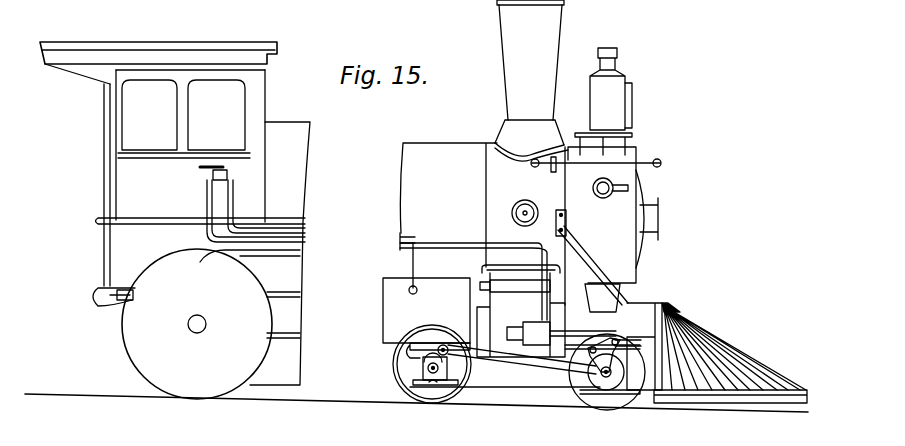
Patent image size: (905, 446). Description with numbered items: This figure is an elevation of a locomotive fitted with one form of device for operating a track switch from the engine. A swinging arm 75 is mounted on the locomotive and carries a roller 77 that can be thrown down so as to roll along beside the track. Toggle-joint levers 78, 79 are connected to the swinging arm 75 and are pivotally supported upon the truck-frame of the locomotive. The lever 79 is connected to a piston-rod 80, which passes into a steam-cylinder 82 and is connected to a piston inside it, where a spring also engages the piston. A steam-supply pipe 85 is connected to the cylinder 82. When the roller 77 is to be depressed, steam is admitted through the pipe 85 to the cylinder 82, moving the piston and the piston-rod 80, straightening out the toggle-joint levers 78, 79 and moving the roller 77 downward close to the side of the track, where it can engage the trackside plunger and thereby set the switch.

The swinging arm 75 is at (520, 362).
The roller 77 is at (607, 384).
The toggle-joint lever 78 is at (598, 353).
The toggle-joint lever 79 is at (630, 346).
The piston-rod 80 is at (571, 334).
The steam-cylinder 82 is at (532, 336).
The steam-supply pipe 85 is at (428, 246).